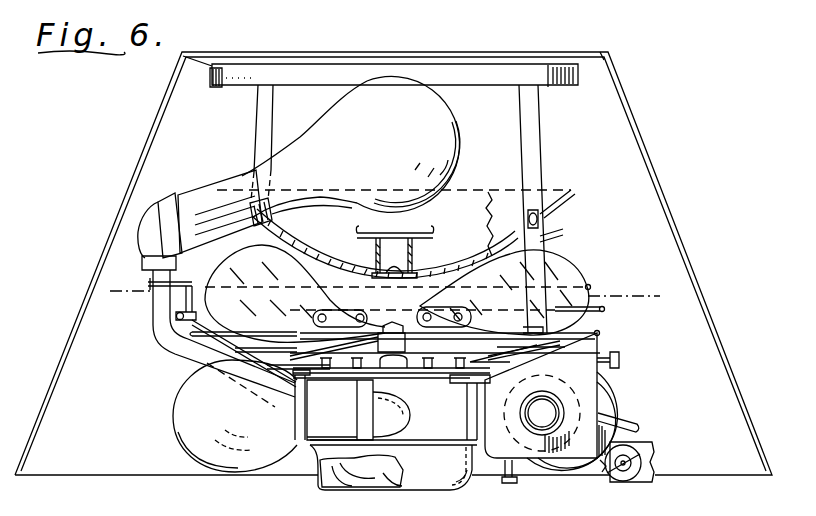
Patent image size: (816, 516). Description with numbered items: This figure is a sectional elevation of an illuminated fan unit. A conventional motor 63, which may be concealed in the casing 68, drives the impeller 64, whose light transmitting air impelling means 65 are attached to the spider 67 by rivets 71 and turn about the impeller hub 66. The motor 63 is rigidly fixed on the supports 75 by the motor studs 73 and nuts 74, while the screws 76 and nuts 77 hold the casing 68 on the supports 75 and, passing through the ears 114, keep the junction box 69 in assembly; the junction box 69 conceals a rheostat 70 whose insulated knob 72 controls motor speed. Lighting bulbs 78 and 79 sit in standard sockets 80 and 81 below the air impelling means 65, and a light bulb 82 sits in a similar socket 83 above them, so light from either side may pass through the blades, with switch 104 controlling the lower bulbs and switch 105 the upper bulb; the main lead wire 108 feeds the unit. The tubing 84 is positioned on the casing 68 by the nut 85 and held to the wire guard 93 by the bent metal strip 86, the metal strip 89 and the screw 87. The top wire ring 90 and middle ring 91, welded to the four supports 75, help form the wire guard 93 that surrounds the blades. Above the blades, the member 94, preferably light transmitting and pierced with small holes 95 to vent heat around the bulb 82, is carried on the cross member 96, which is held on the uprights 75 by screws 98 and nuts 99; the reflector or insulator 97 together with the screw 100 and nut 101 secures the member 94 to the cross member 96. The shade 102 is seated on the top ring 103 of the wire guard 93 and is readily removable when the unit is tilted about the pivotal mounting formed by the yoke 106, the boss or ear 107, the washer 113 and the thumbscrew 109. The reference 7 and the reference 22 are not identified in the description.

The axis line 7 is at (386, 293).
The top plate 22 is at (517, 356).
The motor 63 is at (330, 471).
The impeller 64 is at (386, 323).
The light transmitting air impelling means 65 is at (580, 267).
The impeller hub 66 is at (413, 350).
The spider 67 is at (343, 313).
The casing 68 is at (460, 488).
The junction box 69 is at (605, 411).
The rheostat 70 is at (555, 381).
The rivets 71 is at (310, 318).
The insulated knob 72 is at (542, 413).
The motor studs 73 is at (369, 375).
The nuts 74 is at (445, 373).
The supports 75 is at (528, 135).
The screws 76 is at (463, 383).
The nuts 77 is at (433, 375).
The lighting bulb 78 is at (610, 393).
The lighting bulb 79 is at (177, 411).
The socket 80 is at (358, 410).
The socket 81 is at (393, 477).
The light bulb 82 is at (351, 146).
The socket 83 is at (210, 214).
The tubing 84 is at (192, 362).
The nut 85 is at (297, 390).
The bent metal strip 86 is at (157, 285).
The screw 87 is at (187, 301).
The metal strip 89 is at (190, 315).
The top wire ring 90 is at (592, 287).
The middle ring 91 is at (605, 310).
The wire guard 93 is at (208, 88).
The member 94 is at (570, 200).
The small holes 95 is at (455, 251).
The cross member 96 is at (541, 247).
The reflector or insulator 97 is at (391, 244).
The screws 98 is at (543, 218).
The nuts 99 is at (257, 203).
The screw 100 is at (393, 262).
The nut 101 is at (443, 306).
The shade 102 is at (137, 163).
The top ring 103 is at (551, 88).
The switch 104 is at (621, 361).
The switch 105 is at (511, 481).
The yoke 106 is at (655, 448).
The boss or ear 107 is at (602, 463).
The main lead wire 108 is at (640, 428).
The thumbscrew 109 is at (627, 470).
The washer 113 is at (655, 465).
The ears 114 is at (532, 413).